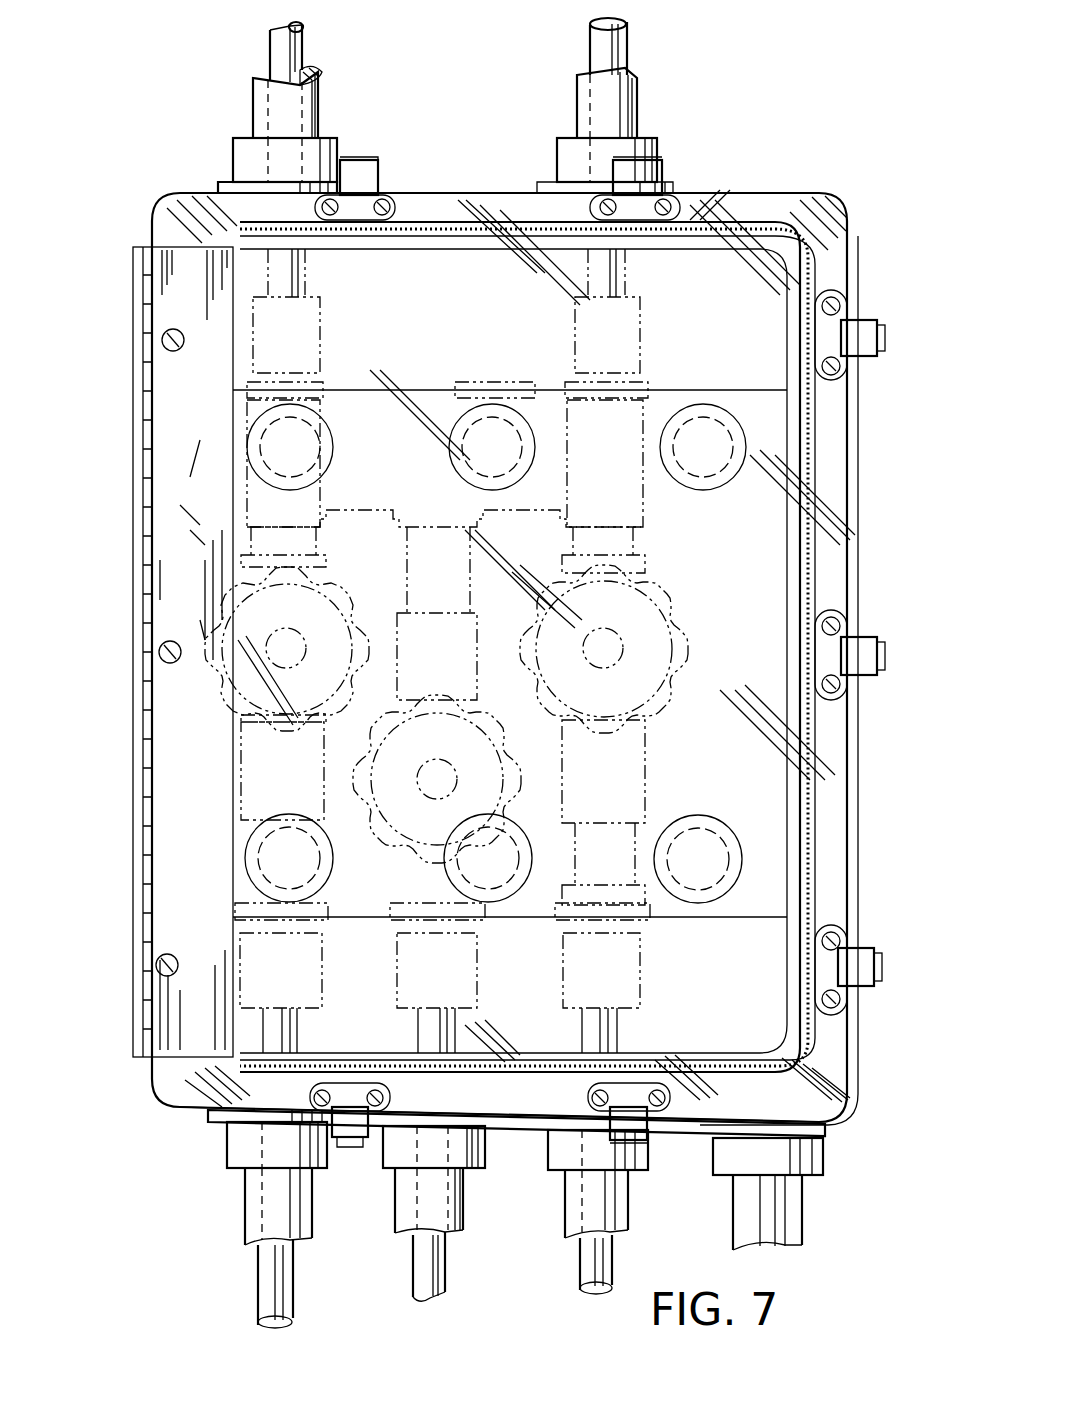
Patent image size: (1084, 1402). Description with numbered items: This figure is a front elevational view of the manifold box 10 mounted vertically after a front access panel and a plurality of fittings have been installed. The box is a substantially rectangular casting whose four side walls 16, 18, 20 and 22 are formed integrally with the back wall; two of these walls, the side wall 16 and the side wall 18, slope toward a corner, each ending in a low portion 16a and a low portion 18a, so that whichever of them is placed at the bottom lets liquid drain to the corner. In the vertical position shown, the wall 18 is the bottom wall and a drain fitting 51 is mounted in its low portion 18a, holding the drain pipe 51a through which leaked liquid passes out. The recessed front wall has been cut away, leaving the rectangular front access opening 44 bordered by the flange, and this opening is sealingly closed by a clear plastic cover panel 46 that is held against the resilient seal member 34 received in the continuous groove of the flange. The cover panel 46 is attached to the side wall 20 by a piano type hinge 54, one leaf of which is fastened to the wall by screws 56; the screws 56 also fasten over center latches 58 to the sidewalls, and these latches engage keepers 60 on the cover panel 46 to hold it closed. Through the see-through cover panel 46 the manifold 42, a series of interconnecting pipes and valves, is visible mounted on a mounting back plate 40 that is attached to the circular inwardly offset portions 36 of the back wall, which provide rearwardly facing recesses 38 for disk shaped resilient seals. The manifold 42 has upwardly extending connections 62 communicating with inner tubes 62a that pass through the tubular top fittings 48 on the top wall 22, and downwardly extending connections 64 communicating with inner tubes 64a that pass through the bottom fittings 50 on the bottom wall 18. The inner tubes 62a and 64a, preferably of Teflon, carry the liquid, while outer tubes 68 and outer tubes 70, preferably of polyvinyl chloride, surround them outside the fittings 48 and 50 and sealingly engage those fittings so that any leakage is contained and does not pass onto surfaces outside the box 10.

The manifold box 10 is at (760, 178).
The side wall 16 is at (852, 592).
The low portion of sidewall 16a is at (856, 1028).
The side wall 18 is at (185, 1108).
The low portion of bottom wall 18a is at (682, 1126).
The side wall 20 is at (210, 190).
The top wall 22 is at (425, 195).
The resilient seal member 34 is at (792, 432).
The circular inwardly offset portion 36 is at (725, 403).
The rearwardly facing recess 38 is at (712, 480).
The mounting back plate 40 is at (518, 400).
The manifold 42 is at (445, 405).
The front access opening 44 is at (805, 452).
The cover panel 46 is at (692, 270).
The tubular top fitting 48 is at (233, 150).
The bottom fitting 50 is at (383, 1168).
The drain fitting 51 is at (730, 1175).
The drain pipe 51a is at (733, 1205).
The piano type hinge 54 is at (175, 470).
The screw 56 is at (160, 653).
The over center latch 58 is at (882, 342).
The keeper 60 is at (845, 295).
The upwardly extending connection 62 is at (320, 348).
The inner tube 62a is at (310, 50).
The downwardly extending connection 64 is at (395, 995).
The inner tube 64a is at (300, 1032).
The outer tube 68 is at (320, 125).
The outer tube 70 is at (395, 1210).